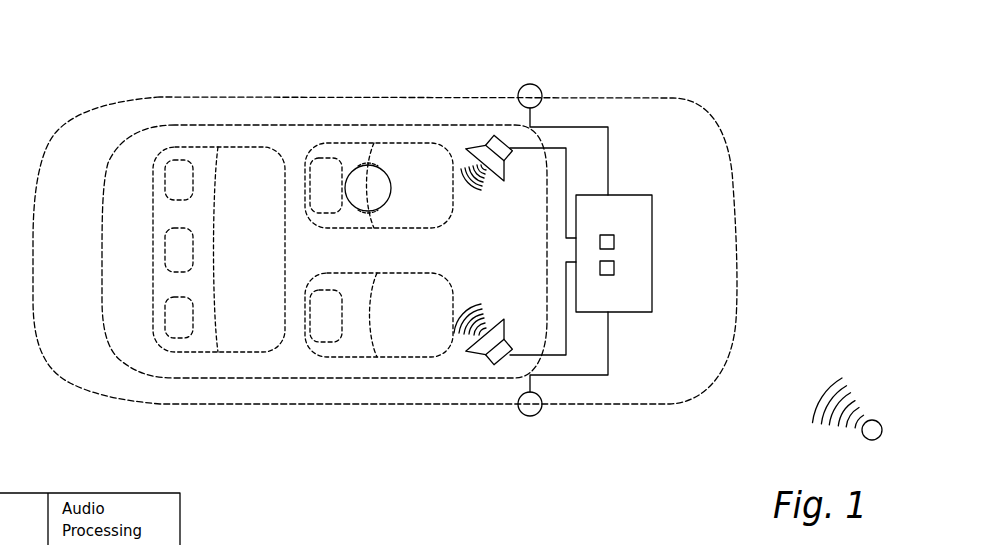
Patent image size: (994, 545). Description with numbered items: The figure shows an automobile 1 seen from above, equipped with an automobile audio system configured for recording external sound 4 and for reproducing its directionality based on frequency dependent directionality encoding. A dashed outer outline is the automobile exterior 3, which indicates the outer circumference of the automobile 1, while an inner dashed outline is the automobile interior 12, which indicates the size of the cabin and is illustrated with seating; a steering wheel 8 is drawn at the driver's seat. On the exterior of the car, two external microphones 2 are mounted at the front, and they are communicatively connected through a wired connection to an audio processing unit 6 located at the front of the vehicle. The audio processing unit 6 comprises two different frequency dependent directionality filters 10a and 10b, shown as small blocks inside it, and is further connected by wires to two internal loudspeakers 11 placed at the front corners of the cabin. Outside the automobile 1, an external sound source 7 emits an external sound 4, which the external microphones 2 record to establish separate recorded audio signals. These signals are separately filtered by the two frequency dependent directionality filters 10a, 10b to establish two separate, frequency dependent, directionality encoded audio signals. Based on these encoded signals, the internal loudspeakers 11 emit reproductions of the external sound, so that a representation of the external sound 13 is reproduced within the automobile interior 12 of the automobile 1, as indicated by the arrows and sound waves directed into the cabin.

The automobile 1 is at (132, 46).
The external microphones 2 is at (530, 86).
The automobile exterior 3 is at (246, 97).
The external sound 4 is at (860, 345).
The audio processing unit 6 is at (653, 210).
The external sound source 7 is at (875, 420).
The steering wheel 8 is at (384, 206).
The frequency dependent directionality filter 10a is at (654, 251).
The frequency dependent directionality filter 10b is at (615, 272).
The internal loudspeakers 11 is at (483, 140).
The automobile interior 12 is at (163, 377).
The representation of the external sound 13 is at (490, 220).